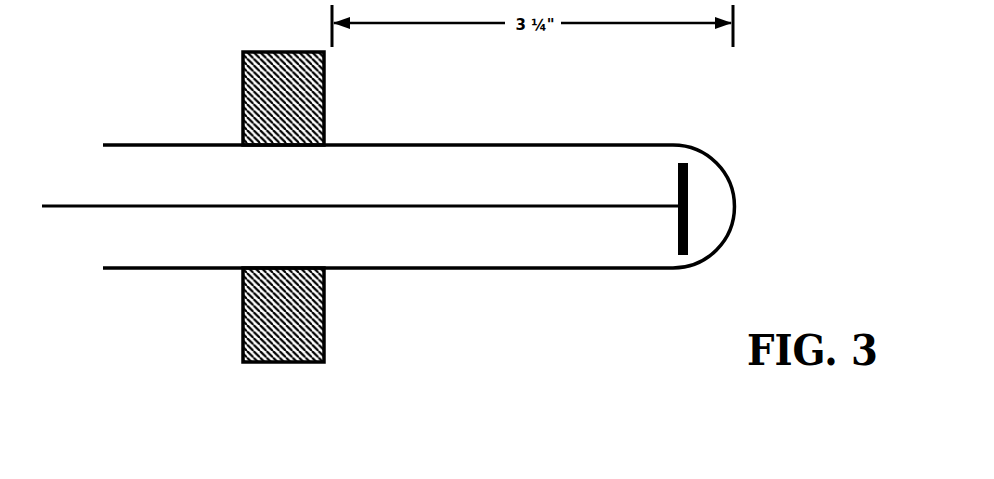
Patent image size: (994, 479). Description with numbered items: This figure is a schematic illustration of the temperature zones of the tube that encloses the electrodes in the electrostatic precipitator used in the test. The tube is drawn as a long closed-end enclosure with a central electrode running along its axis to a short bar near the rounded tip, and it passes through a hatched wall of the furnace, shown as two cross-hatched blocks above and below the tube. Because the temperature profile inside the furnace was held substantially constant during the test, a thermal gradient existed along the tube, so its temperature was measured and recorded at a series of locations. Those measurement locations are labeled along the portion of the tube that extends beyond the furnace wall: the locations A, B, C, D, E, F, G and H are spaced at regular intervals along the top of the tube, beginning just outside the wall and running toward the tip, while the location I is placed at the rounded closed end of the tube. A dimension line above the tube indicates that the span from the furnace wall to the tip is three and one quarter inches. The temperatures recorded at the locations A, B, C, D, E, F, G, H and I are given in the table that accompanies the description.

The temperature measurement location A is at (346, 133).
The temperature measurement location B is at (393, 133).
The temperature measurement location C is at (441, 133).
The temperature measurement location D is at (488, 133).
The temperature measurement location E is at (535, 133).
The temperature measurement location F is at (582, 133).
The temperature measurement location G is at (629, 133).
The temperature measurement location H is at (668, 133).
The temperature measurement location I is at (715, 206).